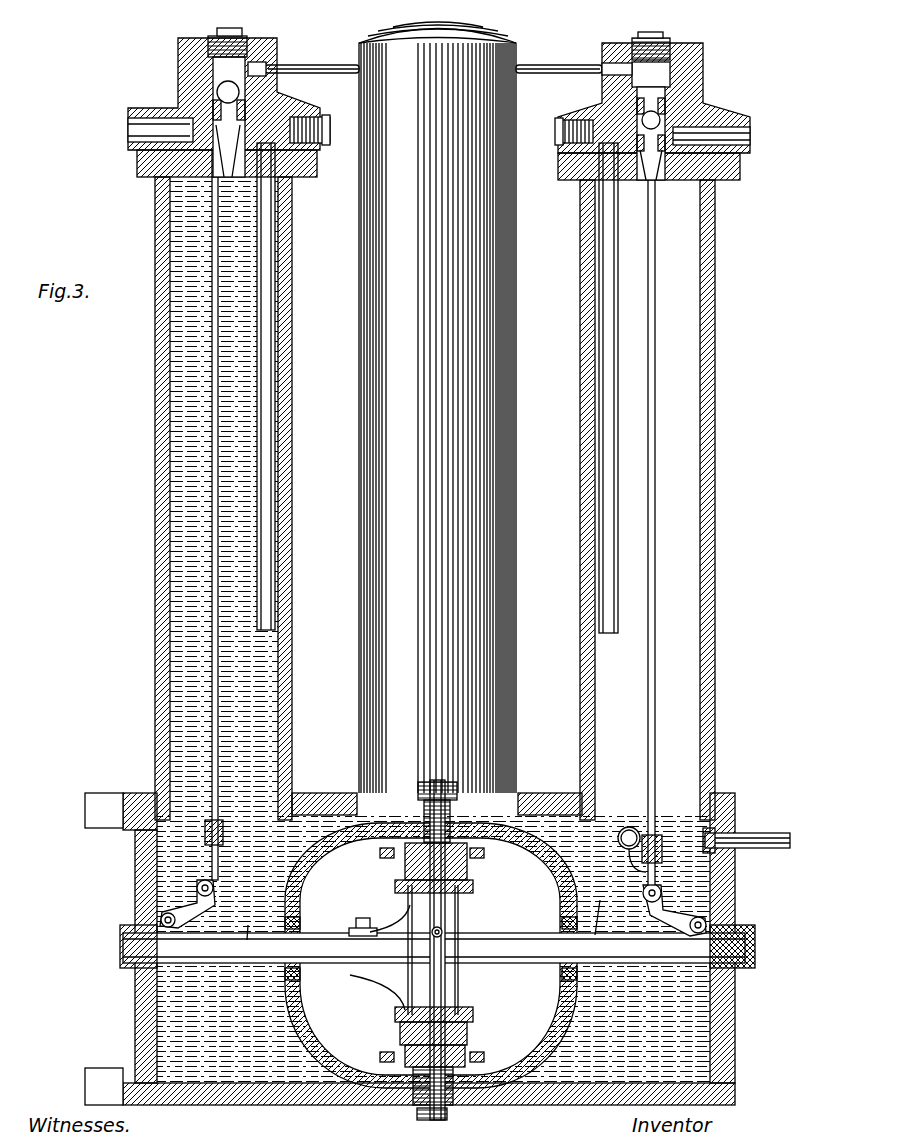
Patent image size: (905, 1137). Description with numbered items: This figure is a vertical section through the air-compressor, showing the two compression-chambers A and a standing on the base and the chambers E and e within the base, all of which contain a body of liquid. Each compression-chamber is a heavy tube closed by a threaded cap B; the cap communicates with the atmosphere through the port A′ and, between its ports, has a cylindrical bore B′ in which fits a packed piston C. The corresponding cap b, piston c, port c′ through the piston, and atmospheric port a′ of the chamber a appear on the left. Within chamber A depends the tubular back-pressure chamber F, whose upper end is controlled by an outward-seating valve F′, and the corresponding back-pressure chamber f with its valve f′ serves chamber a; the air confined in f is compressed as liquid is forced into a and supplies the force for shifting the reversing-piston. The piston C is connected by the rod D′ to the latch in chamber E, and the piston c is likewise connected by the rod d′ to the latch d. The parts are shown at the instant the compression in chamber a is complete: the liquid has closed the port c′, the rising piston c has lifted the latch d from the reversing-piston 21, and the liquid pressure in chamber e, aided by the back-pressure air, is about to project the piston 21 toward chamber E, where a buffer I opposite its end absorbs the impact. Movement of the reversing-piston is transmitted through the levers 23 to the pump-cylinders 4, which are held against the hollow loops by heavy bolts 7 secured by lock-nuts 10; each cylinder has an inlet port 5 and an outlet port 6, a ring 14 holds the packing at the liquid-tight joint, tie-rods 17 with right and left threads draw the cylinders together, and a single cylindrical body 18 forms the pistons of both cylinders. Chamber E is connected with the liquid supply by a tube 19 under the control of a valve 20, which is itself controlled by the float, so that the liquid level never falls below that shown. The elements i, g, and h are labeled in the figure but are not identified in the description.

The chamber E is at (410, 949).
The chamber e is at (221, 1026).
The buffer I is at (712, 968).
The shaft i is at (165, 963).
The reversing-piston 21 is at (435, 906).
The heavy bolt 7 is at (455, 800).
The outlet port 6 is at (402, 1040).
The inlet port 5 is at (470, 800).
The pump-cylinder 4 is at (468, 880).
The lock-nut 10 is at (440, 1108).
The ring 14 is at (380, 1057).
The single cylindrical body 18 is at (445, 930).
The tie-rods 17 is at (448, 940).
The levers 23 is at (385, 995).
The latch d is at (187, 904).
The lever g is at (668, 935).
The valve 20 is at (700, 848).
The tube 19 is at (746, 829).
The compression-chamber a is at (223, 498).
The rod d′ is at (262, 655).
The back-pressure chamber f is at (268, 236).
The compression-chamber A is at (647, 500).
The back-pressure chamber F is at (610, 268).
The rod D′ is at (656, 683).
The cylinder h is at (437, 407).
The cap b is at (180, 66).
The piston c is at (200, 60).
The port c′ is at (248, 58).
The port a′ is at (140, 132).
The valve f′ is at (300, 130).
The cap B is at (706, 86).
The cylindrical bore B′ is at (700, 52).
The piston C is at (690, 78).
The port A′ is at (748, 136).
The valve F′ is at (582, 130).